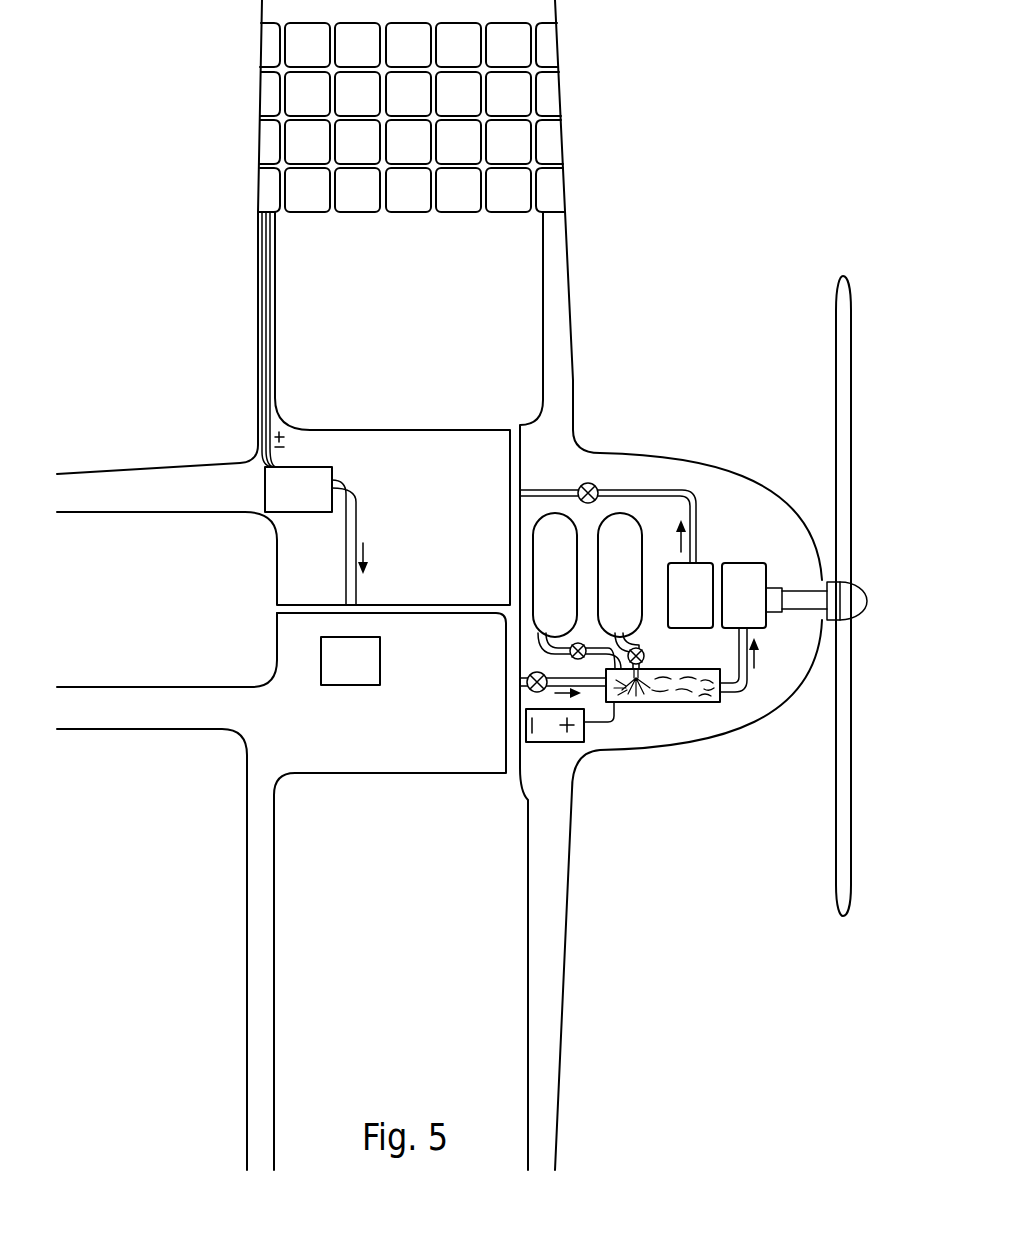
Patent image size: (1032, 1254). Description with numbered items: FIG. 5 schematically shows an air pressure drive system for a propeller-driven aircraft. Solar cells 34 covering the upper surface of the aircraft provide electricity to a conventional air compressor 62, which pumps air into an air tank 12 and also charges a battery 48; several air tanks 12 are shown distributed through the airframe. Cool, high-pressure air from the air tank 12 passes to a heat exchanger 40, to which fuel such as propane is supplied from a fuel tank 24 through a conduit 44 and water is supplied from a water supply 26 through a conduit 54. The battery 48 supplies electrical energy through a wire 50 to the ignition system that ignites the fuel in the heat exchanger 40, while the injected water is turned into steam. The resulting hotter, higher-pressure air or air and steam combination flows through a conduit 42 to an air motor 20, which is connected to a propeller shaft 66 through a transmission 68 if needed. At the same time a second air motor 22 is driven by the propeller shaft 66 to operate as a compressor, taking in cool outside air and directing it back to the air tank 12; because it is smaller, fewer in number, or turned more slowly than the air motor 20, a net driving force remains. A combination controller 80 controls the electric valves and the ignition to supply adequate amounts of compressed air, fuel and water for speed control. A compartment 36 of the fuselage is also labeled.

The air tank 12 is at (401, 431).
The air motor 20 is at (757, 562).
The air motor 22 is at (710, 562).
The fuel tank 24 is at (572, 585).
The water supply 26 is at (637, 585).
The solar cells 34 is at (553, 98).
The fuselage compartment 36 is at (504, 724).
The heat exchanger 40 is at (663, 711).
The conduit 42 is at (739, 650).
The conduit 44 is at (566, 660).
The battery 48 is at (545, 743).
The wire 50 is at (637, 711).
The conduit 54 is at (642, 648).
The air compressor 62 is at (302, 513).
The propeller shaft 66 is at (792, 606).
The transmission 68 is at (778, 588).
The combination controller 80 is at (381, 661).